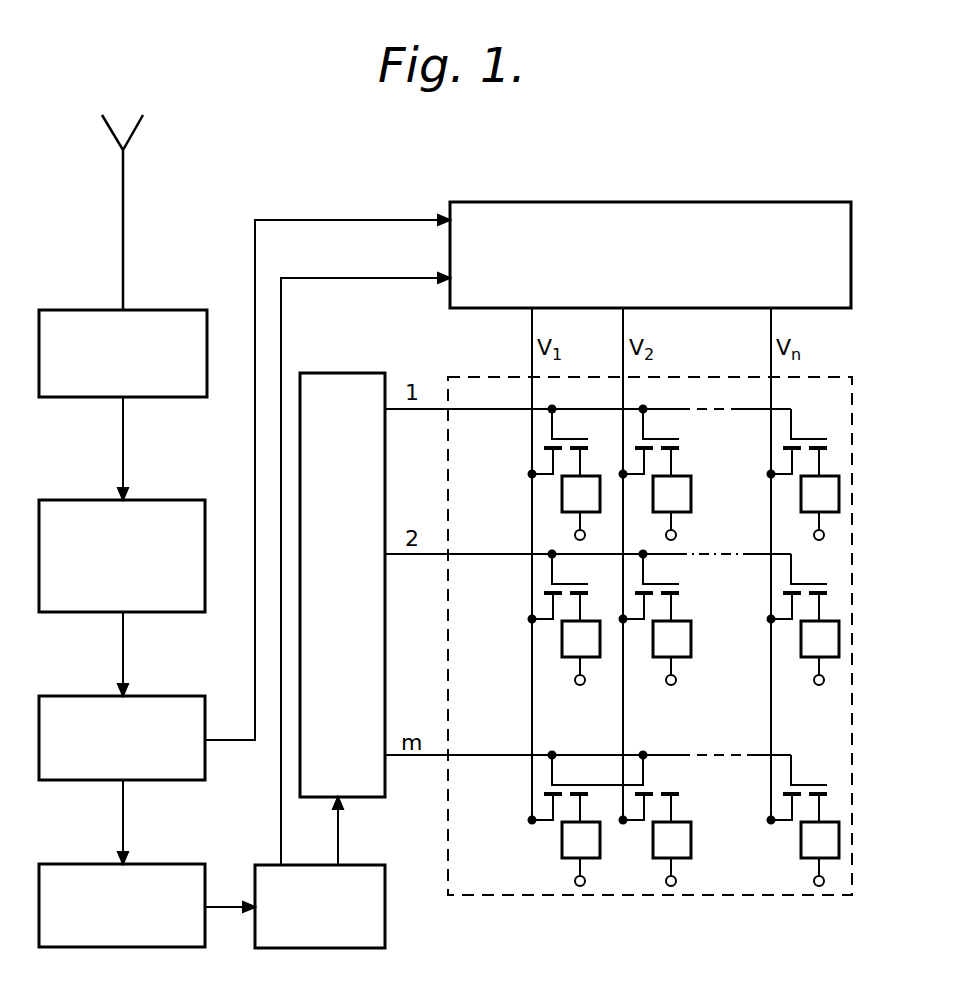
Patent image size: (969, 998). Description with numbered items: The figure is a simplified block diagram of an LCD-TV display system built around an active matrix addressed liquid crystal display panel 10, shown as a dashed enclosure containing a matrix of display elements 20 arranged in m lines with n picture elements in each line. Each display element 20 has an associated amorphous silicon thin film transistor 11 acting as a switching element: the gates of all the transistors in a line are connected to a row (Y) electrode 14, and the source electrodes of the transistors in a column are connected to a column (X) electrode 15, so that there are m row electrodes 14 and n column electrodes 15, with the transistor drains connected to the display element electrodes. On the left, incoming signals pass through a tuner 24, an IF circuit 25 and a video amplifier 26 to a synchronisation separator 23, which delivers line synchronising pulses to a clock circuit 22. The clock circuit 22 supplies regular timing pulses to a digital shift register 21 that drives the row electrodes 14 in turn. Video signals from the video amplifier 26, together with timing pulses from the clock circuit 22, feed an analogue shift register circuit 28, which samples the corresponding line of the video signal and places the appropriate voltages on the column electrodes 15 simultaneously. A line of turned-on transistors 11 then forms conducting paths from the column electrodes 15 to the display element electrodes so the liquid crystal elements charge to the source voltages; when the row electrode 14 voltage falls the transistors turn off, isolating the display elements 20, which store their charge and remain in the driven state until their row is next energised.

The active matrix addressed liquid crystal display panel 10 is at (852, 552).
The amorphous silicon thin film transistor 11 is at (817, 765).
The row (Y) electrode 14 is at (490, 752).
The column (X) electrode 15 is at (771, 395).
The display element 20 is at (783, 870).
The digital shift register 21 is at (342, 585).
The clock circuit 22 is at (320, 906).
The synchronisation separator 23 is at (122, 905).
The tuner 24 is at (123, 353).
The IF circuit 25 is at (122, 556).
The video amplifier 26 is at (122, 738).
The analogue shift register circuit 28 is at (650, 255).